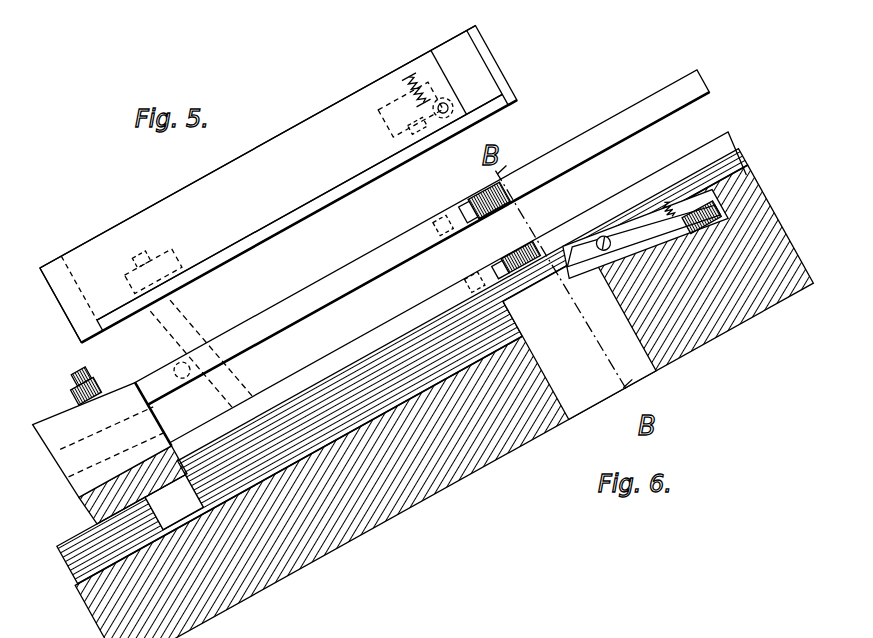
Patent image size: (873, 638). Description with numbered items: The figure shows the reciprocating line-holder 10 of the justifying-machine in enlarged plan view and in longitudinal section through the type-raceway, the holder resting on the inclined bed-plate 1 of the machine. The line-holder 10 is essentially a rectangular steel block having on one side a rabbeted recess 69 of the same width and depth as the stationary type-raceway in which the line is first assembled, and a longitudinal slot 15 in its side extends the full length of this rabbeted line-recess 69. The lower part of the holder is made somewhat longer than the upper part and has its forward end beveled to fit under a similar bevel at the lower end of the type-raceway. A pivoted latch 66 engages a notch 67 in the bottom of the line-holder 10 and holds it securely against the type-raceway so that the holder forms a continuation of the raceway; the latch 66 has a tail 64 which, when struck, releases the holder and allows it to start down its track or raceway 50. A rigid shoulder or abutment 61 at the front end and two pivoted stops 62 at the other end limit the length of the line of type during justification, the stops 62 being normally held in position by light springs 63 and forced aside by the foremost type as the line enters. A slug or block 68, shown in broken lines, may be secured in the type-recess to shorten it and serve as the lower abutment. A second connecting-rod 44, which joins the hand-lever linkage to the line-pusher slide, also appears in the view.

In FIG. 6, the bed-plate 1 is at (85, 612).
In FIG. 5, the reciprocating line-holder 10 is at (200, 178).
In FIG. 6, the reciprocating line-holder 10 is at (366, 270).
In FIG. 6, the longitudinal slot 15 is at (330, 322).
In FIG. 6, the second connecting-rod 44 is at (45, 420).
In FIG. 6, the track or raceway 50 is at (58, 530).
In FIG. 5, the rigid shoulder or abutment 61 is at (118, 333).
In FIG. 6, the rigid shoulder or abutment 61 is at (83, 453).
In FIG. 5, the pivoted stops 62 is at (444, 118).
In FIG. 6, the pivoted stops 62 is at (504, 266).
In FIG. 5, the light springs 63 is at (398, 96).
In FIG. 6, the tail 64 is at (708, 198).
In FIG. 6, the pivoted latch 66 is at (600, 262).
In FIG. 6, the notch 67 is at (568, 245).
In FIG. 5, the slug or block 68 is at (170, 294).
In FIG. 6, the slug or block 68 is at (197, 356).
In FIG. 5, the rabbeted recess 69 is at (250, 246).